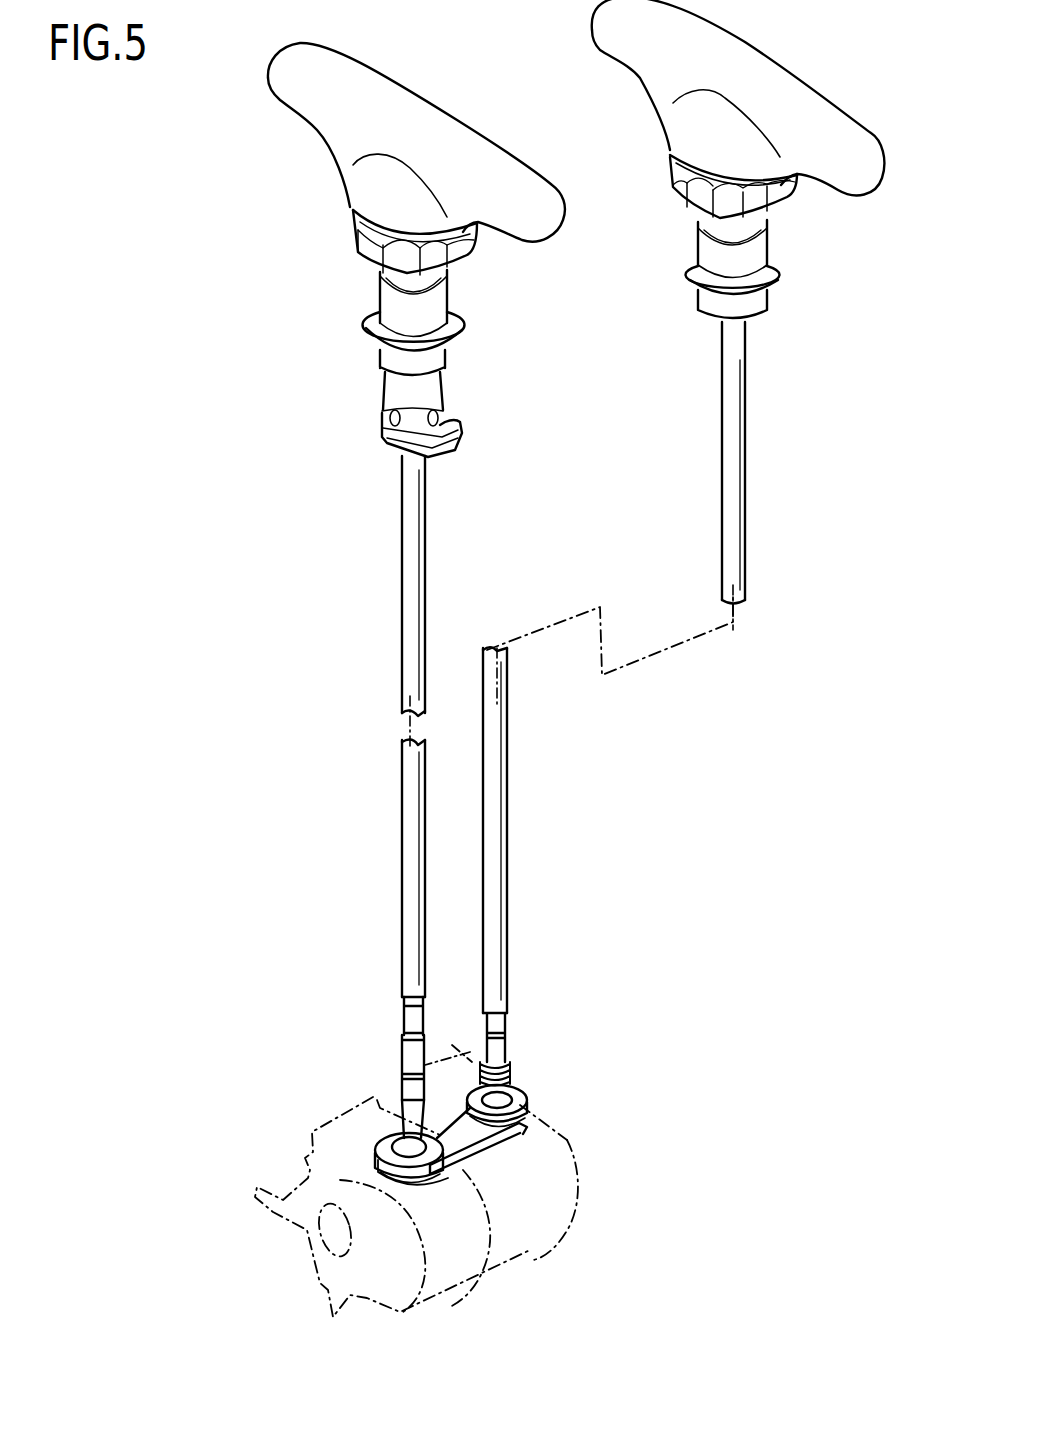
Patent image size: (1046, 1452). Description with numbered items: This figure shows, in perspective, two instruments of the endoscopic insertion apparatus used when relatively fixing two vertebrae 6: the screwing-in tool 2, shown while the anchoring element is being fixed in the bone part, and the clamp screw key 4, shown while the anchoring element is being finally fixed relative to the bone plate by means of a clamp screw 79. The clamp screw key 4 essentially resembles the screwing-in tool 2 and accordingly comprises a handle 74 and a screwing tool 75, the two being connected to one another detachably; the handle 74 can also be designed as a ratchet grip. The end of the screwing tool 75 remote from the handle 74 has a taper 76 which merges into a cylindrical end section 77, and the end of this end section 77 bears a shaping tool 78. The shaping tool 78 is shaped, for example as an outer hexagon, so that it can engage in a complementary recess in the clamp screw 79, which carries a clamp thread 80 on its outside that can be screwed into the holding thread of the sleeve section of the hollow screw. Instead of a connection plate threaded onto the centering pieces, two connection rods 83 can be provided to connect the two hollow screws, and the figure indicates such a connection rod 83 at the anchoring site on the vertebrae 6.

The screwing-in tool 2 is at (394, 554).
The clamp screw key 4 is at (760, 483).
The vertebrae 6 is at (527, 1247).
The handle 74 is at (810, 76).
The screwing tool 75 is at (508, 855).
The taper 76 is at (508, 1013).
The cylindrical end section 77 is at (508, 1043).
The shaping tool 78 is at (518, 1093).
The clamp screw 79 is at (482, 1082).
The clamp thread 80 is at (508, 1068).
The connection rods 83 is at (485, 1156).